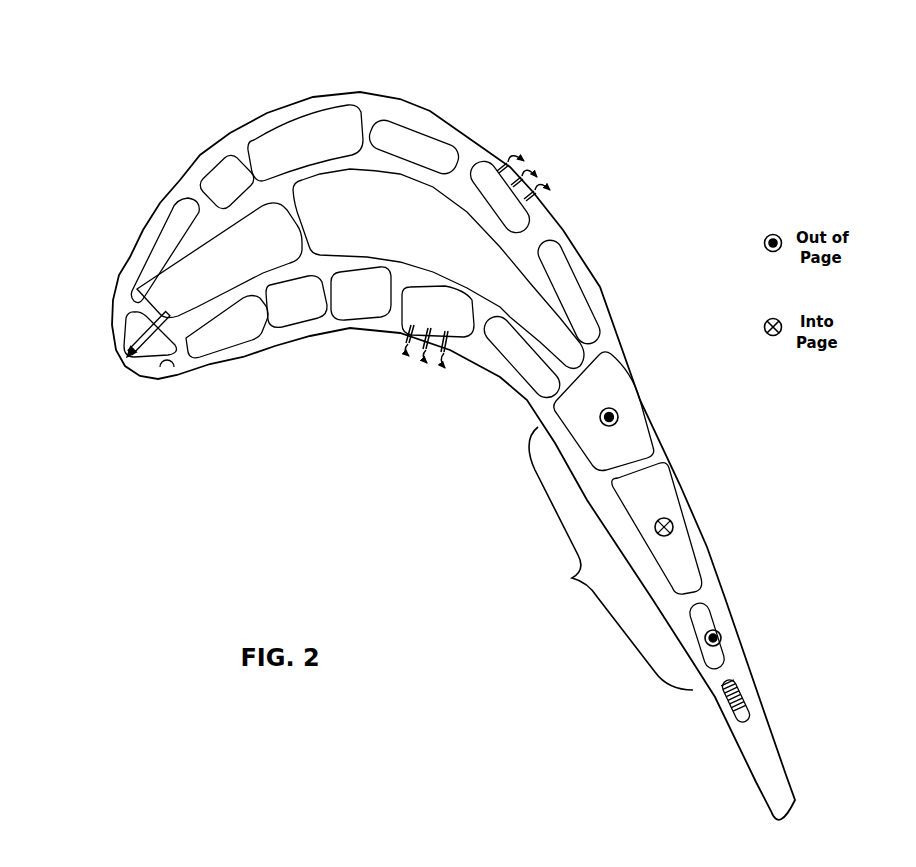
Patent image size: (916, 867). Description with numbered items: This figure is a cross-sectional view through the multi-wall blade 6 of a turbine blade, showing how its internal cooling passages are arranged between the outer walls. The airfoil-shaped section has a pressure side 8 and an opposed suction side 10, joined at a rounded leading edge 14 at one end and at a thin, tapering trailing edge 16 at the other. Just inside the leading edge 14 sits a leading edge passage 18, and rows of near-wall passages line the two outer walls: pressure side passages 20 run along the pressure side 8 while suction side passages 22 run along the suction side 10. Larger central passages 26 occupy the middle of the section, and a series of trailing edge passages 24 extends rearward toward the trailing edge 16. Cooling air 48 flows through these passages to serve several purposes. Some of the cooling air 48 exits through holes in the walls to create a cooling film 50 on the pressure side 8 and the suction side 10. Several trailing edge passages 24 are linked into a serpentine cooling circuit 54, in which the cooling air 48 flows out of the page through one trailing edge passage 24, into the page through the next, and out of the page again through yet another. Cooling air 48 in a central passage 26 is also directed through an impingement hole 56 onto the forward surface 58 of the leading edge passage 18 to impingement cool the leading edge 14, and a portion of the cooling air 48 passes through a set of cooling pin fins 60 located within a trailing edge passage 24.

The multi-wall blade 6 is at (672, 183).
The pressure side 8 is at (318, 420).
The suction side 10 is at (512, 102).
The leading edge 14 is at (102, 392).
The trailing edge 16 is at (805, 775).
The leading edge passage 18 is at (123, 330).
The pressure side passage 20 is at (233, 343).
The suction side passage 22 is at (208, 173).
The trailing edge passage 24 is at (637, 400).
The central passage 26 is at (208, 277).
The cooling air 48 is at (140, 343).
The cooling film 50 is at (538, 167).
The serpentine cooling circuit 54 is at (611, 558).
The impingement hole 56 is at (157, 322).
The forward surface 58 is at (173, 368).
The cooling pin fins 60 is at (732, 702).